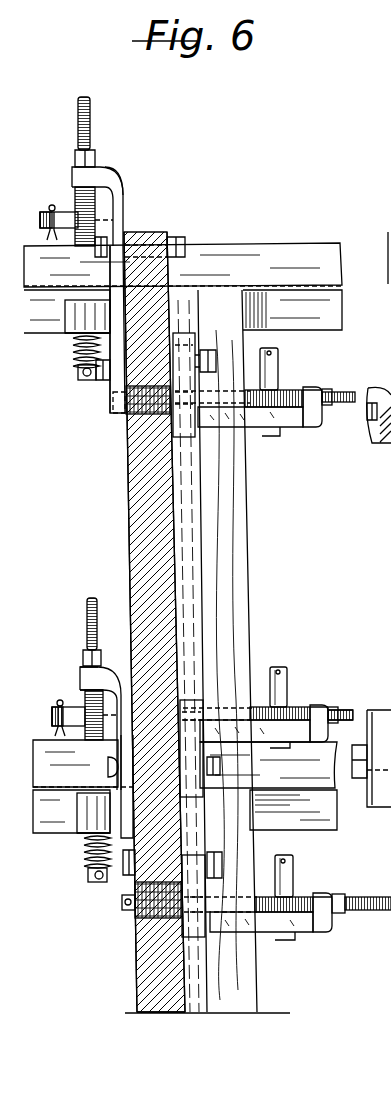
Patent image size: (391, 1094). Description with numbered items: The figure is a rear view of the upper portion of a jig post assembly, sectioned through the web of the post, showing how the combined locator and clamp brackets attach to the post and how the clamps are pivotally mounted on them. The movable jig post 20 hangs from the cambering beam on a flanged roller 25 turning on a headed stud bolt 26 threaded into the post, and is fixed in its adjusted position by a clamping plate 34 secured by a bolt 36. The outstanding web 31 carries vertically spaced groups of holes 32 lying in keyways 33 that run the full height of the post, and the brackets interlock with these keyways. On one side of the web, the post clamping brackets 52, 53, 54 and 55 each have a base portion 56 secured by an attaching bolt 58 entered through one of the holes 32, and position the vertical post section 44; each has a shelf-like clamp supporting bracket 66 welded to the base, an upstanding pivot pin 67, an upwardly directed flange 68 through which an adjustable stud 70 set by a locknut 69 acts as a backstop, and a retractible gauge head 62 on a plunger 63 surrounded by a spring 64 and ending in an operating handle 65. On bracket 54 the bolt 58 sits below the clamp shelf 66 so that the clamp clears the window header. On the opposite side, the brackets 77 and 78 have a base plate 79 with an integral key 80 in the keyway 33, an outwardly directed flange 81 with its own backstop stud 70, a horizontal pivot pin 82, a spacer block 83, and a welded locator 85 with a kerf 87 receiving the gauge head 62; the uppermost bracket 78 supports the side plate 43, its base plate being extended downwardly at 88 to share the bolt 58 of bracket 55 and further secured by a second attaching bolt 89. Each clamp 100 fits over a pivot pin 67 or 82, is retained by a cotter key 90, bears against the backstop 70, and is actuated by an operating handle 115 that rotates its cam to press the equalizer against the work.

The movable jig post 20 is at (122, 497).
The web portion 31 is at (137, 517).
The keyway 33 is at (128, 461).
The adjustment holes 32 is at (136, 988).
The spring 64 is at (125, 422).
The vertical post section 44 is at (233, 497).
The side plate 43 is at (277, 245).
The operating handle 115 is at (88, 112).
The adjustable stud 70 is at (92, 151).
The outwardly directed flange 81 is at (104, 171).
The combined locator and clamping bracket 77 is at (80, 670).
The spacer block 83 is at (100, 207).
The combination locator and clamping bracket 78 is at (130, 206).
The integral key 80 is at (126, 222).
The downward extension of base plate 88 is at (110, 386).
The clamp 100 is at (45, 225).
The cotter key 90 is at (53, 207).
The horizontal pivot pin 82 is at (40, 213).
The second attaching bolt 89 is at (95, 258).
The base plate 79 is at (120, 275).
The kerf 87 is at (64, 306).
The locator member 85 is at (72, 320).
The locknut 69 is at (73, 348).
The operating handle 65 is at (78, 372).
The plunger 63 is at (76, 380).
The attaching bolt 58 is at (219, 356).
The base portion 56 is at (173, 425).
The gauge head 62 is at (196, 406).
The clamp supporting bracket 66 is at (260, 430).
The post clamping bracket 55 is at (312, 428).
The post clamping bracket 53 is at (326, 935).
The upwardly directed flange 68 is at (321, 383).
The pivot pin 67 is at (279, 358).
The headed stud bolt 26 is at (367, 418).
The roller 25 is at (383, 441).
The post clamping bracket 54 is at (296, 745).
The post clamping bracket 52 is at (325, 742).
The bolt 36 is at (360, 779).
The clamping plate 34 is at (376, 807).